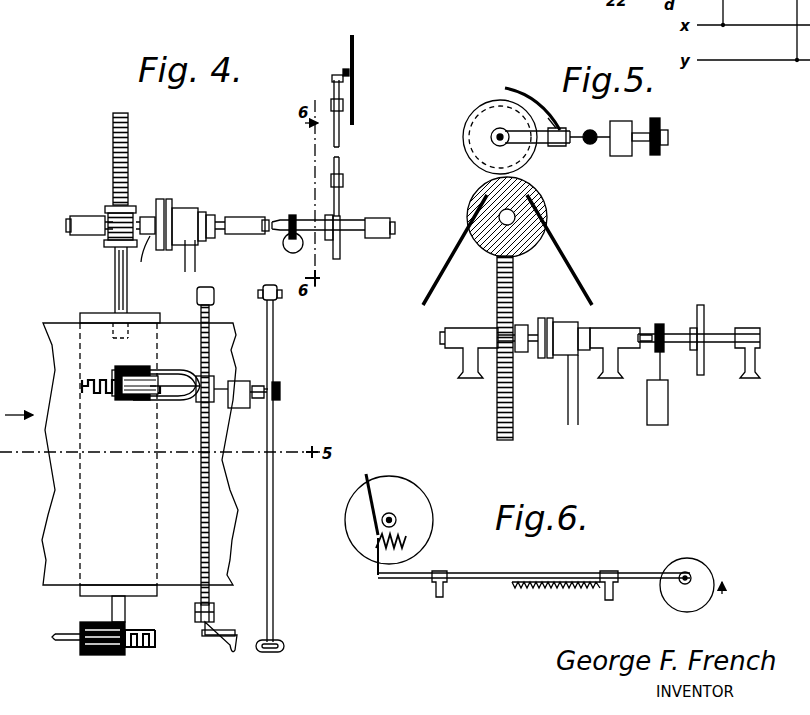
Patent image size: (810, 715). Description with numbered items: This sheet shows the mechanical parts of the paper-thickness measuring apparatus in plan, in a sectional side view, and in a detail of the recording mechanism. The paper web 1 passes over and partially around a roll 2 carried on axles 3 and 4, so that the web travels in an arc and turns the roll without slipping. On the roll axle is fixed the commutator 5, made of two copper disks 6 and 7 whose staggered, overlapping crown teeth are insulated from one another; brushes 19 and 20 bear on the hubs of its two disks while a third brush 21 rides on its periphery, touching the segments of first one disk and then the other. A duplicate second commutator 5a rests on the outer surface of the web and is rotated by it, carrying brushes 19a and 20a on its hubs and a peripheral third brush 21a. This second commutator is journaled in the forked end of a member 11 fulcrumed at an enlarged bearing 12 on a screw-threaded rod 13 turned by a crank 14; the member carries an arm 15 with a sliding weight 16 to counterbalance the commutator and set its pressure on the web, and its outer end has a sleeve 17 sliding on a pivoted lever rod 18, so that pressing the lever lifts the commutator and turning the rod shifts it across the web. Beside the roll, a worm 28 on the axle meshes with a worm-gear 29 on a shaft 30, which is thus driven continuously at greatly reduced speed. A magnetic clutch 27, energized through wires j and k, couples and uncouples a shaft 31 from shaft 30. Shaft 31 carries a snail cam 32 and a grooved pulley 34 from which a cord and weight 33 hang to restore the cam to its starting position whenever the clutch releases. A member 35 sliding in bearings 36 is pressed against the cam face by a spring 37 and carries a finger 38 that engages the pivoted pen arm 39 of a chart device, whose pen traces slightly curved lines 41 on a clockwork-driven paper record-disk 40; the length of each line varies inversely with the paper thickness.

In FIG. 4, the paper web 1 is at (60, 524).
In FIG. 5, the paper web 1 is at (444, 252).
In FIG. 4, the roll 2 is at (80, 591).
In FIG. 5, the roll 2 is at (484, 245).
In FIG. 4, the axle 3 is at (126, 609).
In FIG. 4, the axle 4 is at (117, 275).
In FIG. 5, the axle 4 is at (530, 240).
In FIG. 4, the commutator 5 is at (157, 650).
In FIG. 4, the second commutator 5a is at (92, 378).
In FIG. 5, the second commutator 5a is at (470, 124).
In FIG. 4, the copper disk 6 is at (140, 650).
In FIG. 4, the copper disk 7 is at (152, 630).
In FIG. 4, the member 11 is at (166, 370).
In FIG. 5, the member 11 is at (553, 128).
In FIG. 4, the fulcrum bearing 12 is at (214, 380).
In FIG. 5, the fulcrum bearing 12 is at (590, 130).
In FIG. 4, the screw-threaded rod 13 is at (201, 492).
In FIG. 5, the screw-threaded rod 13 is at (590, 145).
In FIG. 4, the crank 14 is at (222, 640).
In FIG. 4, the arm 15 is at (282, 385).
In FIG. 5, the arm 15 is at (640, 133).
In FIG. 4, the weight 16 is at (248, 384).
In FIG. 5, the weight 16 is at (622, 156).
In FIG. 4, the sleeve 17 is at (281, 386).
In FIG. 5, the sleeve 17 is at (668, 138).
In FIG. 4, the lever rod 18 is at (267, 494).
In FIG. 5, the lever rod 18 is at (656, 118).
In FIG. 4, the brush 19 is at (98, 656).
In FIG. 4, the brush 19a is at (132, 402).
In FIG. 5, the brush 19a is at (495, 136).
In FIG. 4, the brush 20 is at (92, 624).
In FIG. 4, the brush 20a is at (140, 368).
In FIG. 4, the third brush 21 is at (78, 638).
In FIG. 4, the third brush 21a is at (158, 404).
In FIG. 5, the third brush 21a is at (530, 90).
In FIG. 4, the magnetic clutch 27 is at (166, 210).
In FIG. 5, the magnetic clutch 27 is at (543, 358).
In FIG. 4, the worm 28 is at (108, 215).
In FIG. 5, the worm 28 is at (476, 192).
In FIG. 4, the worm-gear 29 is at (113, 147).
In FIG. 5, the worm-gear 29 is at (497, 290).
In FIG. 4, the shaft 30 is at (148, 259).
In FIG. 5, the shaft 30 is at (521, 325).
In FIG. 4, the shaft 31 is at (242, 217).
In FIG. 5, the shaft 31 is at (674, 330).
In FIG. 6, the shaft 31 is at (688, 572).
In FIG. 4, the snail cam 32 is at (341, 250).
In FIG. 5, the snail cam 32 is at (704, 312).
In FIG. 6, the snail cam 32 is at (710, 580).
In FIG. 4, the weight 33 is at (284, 250).
In FIG. 5, the weight 33 is at (668, 404).
In FIG. 4, the grooved pulley 34 is at (292, 215).
In FIG. 5, the grooved pulley 34 is at (658, 324).
In FIG. 4, the reciprocating member 35 is at (342, 160).
In FIG. 6, the reciprocating member 35 is at (536, 573).
In FIG. 4, the bearings 36 is at (331, 103).
In FIG. 6, the bearings 36 is at (437, 590).
In FIG. 6, the spring 37 is at (534, 590).
In FIG. 4, the finger 38 is at (335, 75).
In FIG. 6, the finger 38 is at (378, 577).
In FIG. 4, the pen arm 39 is at (346, 68).
In FIG. 6, the pen arm 39 is at (368, 512).
In FIG. 4, the paper record-disk 40 is at (355, 50).
In FIG. 6, the paper record-disk 40 is at (410, 500).
In FIG. 6, the curved lines 41 is at (404, 542).
In FIG. 4, the wire j is at (183, 258).
In FIG. 5, the wire j is at (566, 418).
In FIG. 4, the wire k is at (197, 257).
In FIG. 5, the wire k is at (580, 418).